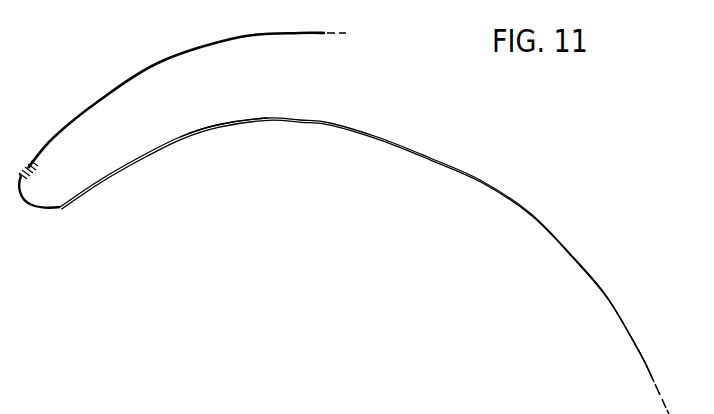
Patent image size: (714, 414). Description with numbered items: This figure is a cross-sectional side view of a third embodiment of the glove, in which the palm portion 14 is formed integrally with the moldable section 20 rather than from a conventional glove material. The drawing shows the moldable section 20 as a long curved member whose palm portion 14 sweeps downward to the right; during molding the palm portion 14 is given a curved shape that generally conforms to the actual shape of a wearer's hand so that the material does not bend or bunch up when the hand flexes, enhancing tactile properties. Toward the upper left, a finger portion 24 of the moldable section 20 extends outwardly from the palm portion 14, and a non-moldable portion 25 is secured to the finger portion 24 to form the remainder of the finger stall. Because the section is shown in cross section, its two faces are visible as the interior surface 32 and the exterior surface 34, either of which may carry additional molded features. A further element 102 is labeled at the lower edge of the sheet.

The palm portion 14 is at (499, 218).
The moldable section 20 is at (218, 142).
The finger portion 24 is at (137, 159).
The non-moldable portion 25 is at (163, 60).
The interior surface 32 is at (323, 119).
The exterior surface 34 is at (275, 126).
The sheath 102 is at (205, 412).